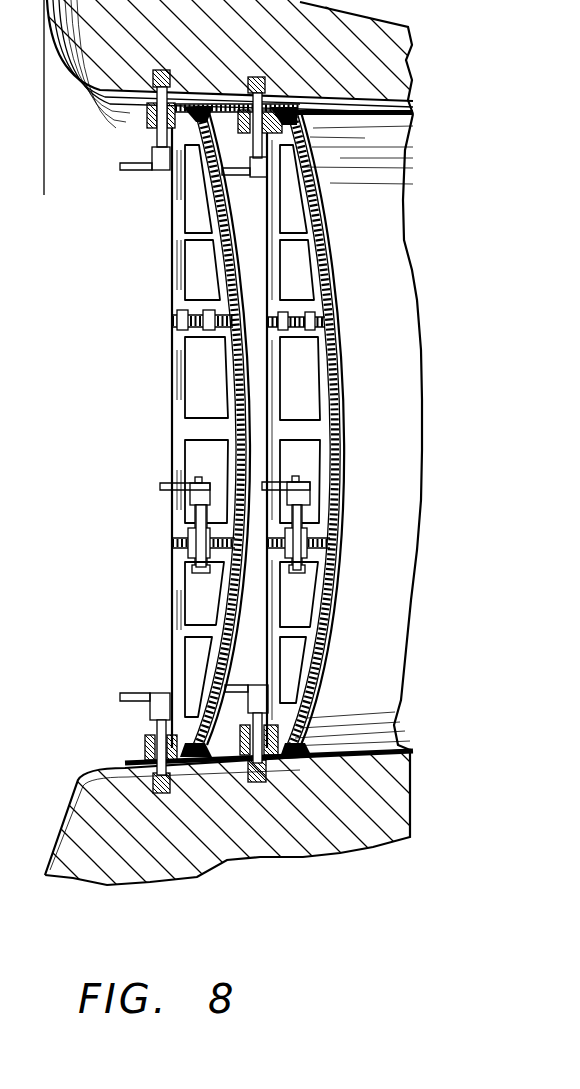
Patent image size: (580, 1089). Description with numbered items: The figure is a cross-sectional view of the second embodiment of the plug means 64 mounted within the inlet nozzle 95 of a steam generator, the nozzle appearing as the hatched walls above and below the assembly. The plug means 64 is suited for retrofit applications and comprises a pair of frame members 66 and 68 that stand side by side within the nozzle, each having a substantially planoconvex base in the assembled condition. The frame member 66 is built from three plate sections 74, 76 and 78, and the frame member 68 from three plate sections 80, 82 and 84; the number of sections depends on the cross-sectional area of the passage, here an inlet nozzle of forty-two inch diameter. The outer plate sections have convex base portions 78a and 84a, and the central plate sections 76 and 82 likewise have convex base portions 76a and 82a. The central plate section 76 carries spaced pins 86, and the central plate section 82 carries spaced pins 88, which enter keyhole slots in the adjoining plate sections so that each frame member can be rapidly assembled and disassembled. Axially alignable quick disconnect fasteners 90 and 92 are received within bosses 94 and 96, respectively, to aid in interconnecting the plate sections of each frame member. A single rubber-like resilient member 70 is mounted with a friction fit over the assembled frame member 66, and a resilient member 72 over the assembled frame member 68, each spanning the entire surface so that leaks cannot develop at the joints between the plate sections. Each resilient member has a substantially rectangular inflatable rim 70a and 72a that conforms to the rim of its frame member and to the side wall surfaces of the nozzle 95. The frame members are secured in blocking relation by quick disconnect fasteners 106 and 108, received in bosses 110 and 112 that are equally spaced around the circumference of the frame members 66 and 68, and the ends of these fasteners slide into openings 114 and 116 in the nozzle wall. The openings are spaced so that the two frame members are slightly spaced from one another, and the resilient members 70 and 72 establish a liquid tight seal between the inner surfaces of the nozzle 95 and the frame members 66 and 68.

The plug means 64 is at (146, 328).
The frame member 66 is at (166, 367).
The frame member 68 is at (344, 381).
The resilient member 70 is at (227, 645).
The inflatable rim 70a is at (227, 103).
The resilient member 72 is at (330, 624).
The inflatable rim 72a is at (405, 132).
The plate section 74 is at (170, 243).
The plate section 76 is at (174, 430).
The base portion 76a is at (227, 452).
The plate section 78 is at (172, 639).
The base portion 78a is at (210, 638).
The plate section 80 is at (265, 230).
The plate section 82 is at (340, 419).
The base portion 82a is at (318, 440).
The plate section 84 is at (311, 632).
The base portion 84a is at (307, 667).
The pins 86 is at (207, 310).
The pins 88 is at (300, 305).
The quick disconnect fastener 90 is at (165, 490).
The quick disconnect fastener 92 is at (307, 495).
The boss 94 is at (186, 535).
The inlet nozzle 95 is at (253, 864).
The boss 96 is at (312, 537).
The quick disconnect fastener 106 is at (140, 168).
The quick disconnect fastener 108 is at (220, 170).
The boss 110 is at (150, 108).
The boss 112 is at (237, 128).
The opening 114 is at (170, 70).
The opening 116 is at (265, 77).